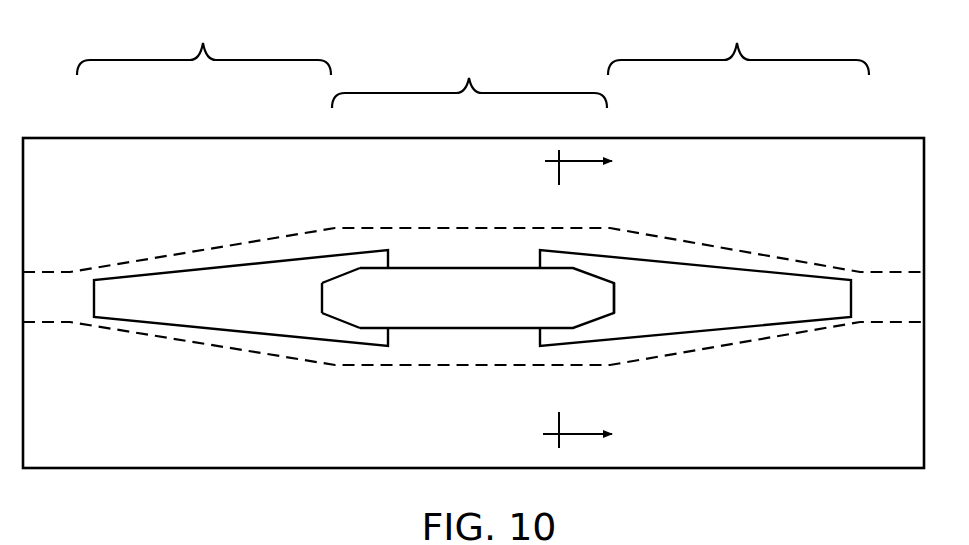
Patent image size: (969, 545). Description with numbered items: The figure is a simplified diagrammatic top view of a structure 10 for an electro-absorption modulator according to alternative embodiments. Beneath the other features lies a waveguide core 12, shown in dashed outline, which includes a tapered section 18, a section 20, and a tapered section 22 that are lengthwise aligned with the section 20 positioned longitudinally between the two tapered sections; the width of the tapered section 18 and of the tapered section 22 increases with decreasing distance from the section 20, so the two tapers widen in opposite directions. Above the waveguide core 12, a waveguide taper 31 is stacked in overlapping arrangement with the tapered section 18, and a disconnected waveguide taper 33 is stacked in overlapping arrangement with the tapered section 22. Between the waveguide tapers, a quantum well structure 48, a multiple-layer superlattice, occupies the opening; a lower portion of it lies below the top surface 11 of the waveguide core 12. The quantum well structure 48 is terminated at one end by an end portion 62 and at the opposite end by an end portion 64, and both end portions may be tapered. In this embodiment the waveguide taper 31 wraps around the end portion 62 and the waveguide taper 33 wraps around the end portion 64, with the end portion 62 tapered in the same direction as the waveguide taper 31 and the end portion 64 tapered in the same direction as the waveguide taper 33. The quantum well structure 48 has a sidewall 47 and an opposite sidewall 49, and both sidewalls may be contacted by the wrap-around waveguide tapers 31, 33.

The structure 10 is at (122, 211).
The top surface 11 is at (600, 298).
The waveguide core 12 is at (430, 342).
The tapered section 18 is at (204, 42).
The section 20 is at (469, 80).
The tapered section 22 is at (738, 45).
The waveguide taper 31 is at (160, 288).
The waveguide taper 33 is at (777, 297).
The sidewall 47 is at (352, 273).
The quantum well structure 48 is at (440, 254).
The sidewall 49 is at (348, 322).
The end portion 62 is at (348, 302).
The end portion 64 is at (593, 302).